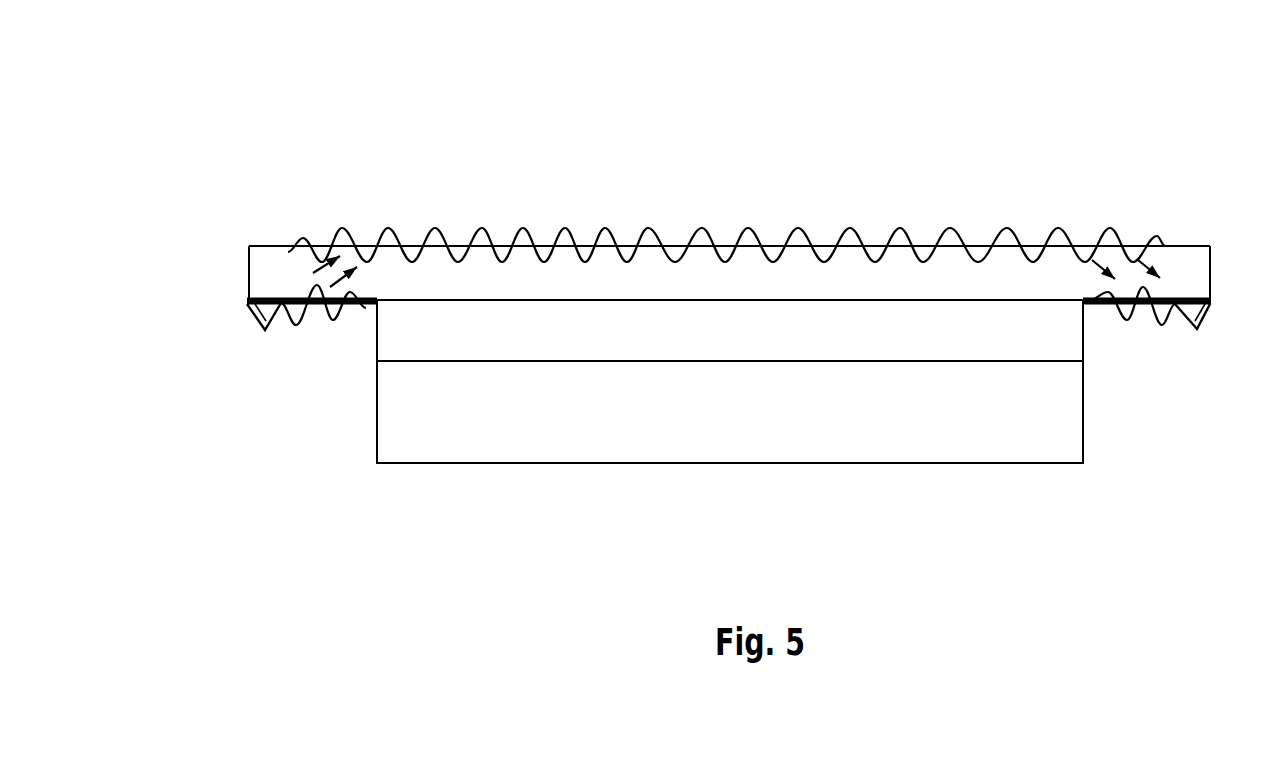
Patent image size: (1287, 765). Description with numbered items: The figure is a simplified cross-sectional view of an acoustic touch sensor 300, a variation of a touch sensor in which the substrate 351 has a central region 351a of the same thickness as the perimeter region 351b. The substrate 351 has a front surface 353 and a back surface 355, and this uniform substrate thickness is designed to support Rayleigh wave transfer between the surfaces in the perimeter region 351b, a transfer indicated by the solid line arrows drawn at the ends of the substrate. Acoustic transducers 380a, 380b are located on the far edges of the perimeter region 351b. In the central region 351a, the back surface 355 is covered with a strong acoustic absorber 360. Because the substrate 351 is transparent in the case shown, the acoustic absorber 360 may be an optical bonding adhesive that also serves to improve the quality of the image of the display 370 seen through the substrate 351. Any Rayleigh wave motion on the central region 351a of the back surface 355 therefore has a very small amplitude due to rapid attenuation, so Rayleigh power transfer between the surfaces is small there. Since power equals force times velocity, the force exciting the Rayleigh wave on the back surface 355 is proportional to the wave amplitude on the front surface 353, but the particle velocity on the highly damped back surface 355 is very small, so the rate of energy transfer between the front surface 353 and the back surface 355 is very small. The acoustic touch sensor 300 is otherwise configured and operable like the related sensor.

The acoustic touch sensor 300 is at (268, 78).
The substrate 351 is at (752, 294).
The central region 351a is at (820, 204).
The perimeter region 351b is at (305, 204).
The front surface 353 is at (542, 243).
The back surface 355 is at (545, 290).
The acoustic absorber 360 is at (617, 345).
The display 370 is at (1050, 437).
The acoustic transducer 380a is at (250, 315).
The acoustic transducer 380b is at (1208, 315).